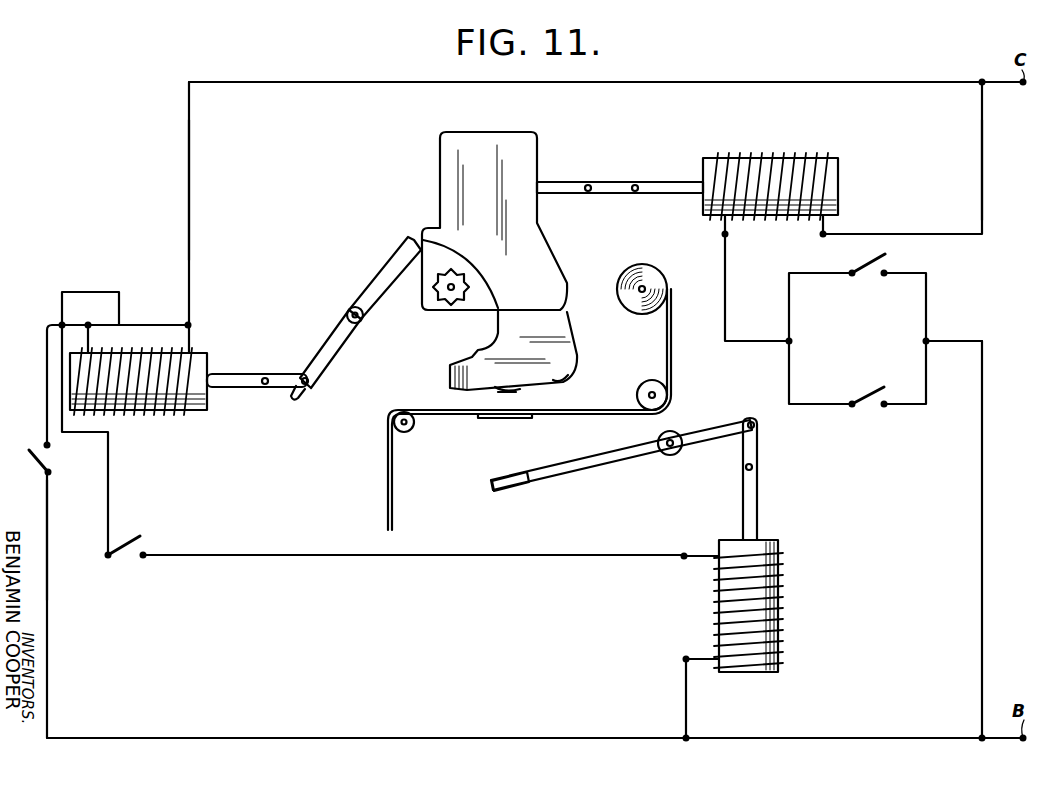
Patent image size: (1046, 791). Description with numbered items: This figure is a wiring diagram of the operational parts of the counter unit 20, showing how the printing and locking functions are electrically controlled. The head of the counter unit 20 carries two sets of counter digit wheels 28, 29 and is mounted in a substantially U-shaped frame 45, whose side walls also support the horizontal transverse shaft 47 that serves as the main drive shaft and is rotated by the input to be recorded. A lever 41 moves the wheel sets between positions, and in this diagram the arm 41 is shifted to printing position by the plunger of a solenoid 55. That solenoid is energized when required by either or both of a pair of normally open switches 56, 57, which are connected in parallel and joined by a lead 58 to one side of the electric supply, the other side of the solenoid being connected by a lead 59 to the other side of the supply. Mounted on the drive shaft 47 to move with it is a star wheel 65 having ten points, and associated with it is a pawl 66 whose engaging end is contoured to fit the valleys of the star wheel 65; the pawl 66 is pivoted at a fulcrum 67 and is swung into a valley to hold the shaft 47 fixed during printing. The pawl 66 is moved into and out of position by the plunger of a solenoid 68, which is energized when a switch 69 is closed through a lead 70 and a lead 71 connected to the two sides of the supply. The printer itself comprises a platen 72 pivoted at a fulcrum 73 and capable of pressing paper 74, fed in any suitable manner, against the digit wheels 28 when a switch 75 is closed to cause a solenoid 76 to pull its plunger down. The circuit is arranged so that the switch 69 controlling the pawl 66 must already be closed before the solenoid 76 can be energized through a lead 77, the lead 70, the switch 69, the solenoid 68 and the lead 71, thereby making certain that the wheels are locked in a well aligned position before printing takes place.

The counter unit 20 is at (487, 348).
The counter digit wheels 28 is at (518, 393).
The counter digit wheels 29 is at (570, 378).
The lever 41 is at (580, 182).
The frame 45 is at (440, 178).
The horizontal transverse shaft 47 is at (462, 282).
The solenoid 55 is at (838, 172).
The normally open switch 56 is at (870, 272).
The normally open switch 57 is at (876, 380).
The lead 58 is at (958, 341).
The lead 59 is at (982, 182).
The star wheel 65 is at (440, 312).
The pawl 66 is at (395, 262).
The fulcrum 67 is at (347, 311).
The solenoid 68 is at (204, 352).
The switch 69 is at (44, 442).
The lead 70 is at (48, 528).
The lead 71 is at (188, 190).
The platen 72 is at (560, 472).
The fulcrum 73 is at (673, 437).
The paper 74 is at (458, 414).
The switch 75 is at (144, 546).
The solenoid 76 is at (778, 548).
The lead 77 is at (790, 738).